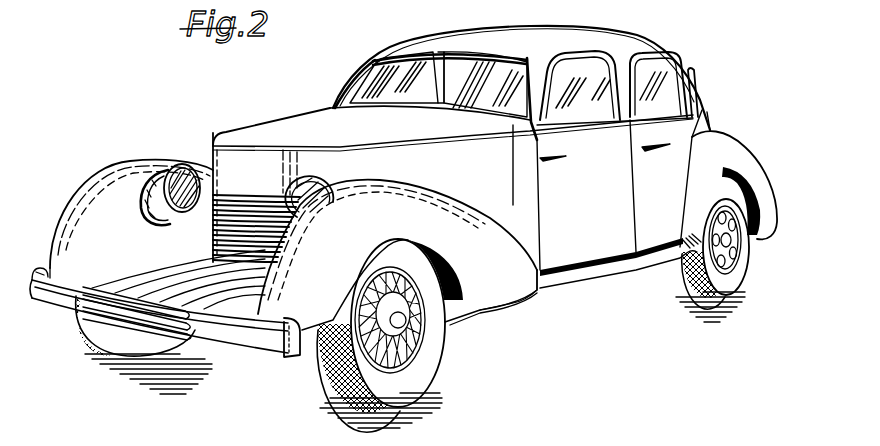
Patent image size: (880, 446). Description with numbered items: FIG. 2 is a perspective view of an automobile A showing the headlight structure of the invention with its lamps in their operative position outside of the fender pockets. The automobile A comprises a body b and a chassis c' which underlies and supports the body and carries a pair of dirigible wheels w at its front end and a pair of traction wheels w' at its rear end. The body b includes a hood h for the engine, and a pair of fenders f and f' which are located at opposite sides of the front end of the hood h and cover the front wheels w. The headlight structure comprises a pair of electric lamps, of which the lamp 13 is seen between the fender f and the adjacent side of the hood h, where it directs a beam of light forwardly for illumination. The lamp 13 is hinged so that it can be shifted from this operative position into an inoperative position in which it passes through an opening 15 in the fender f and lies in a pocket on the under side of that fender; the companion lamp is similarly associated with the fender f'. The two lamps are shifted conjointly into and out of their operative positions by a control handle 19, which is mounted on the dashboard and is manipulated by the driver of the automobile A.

The fender f is at (157, 224).
The electric lamp 13 is at (184, 160).
The opening 15 is at (157, 214).
The hood h is at (289, 121).
The control handle 19 is at (333, 187).
The fender f' is at (397, 255).
The dirigible wheels w is at (387, 335).
The traction wheels w' is at (724, 244).
The automobile A is at (520, 166).
The body b is at (592, 256).
The chassis c' is at (519, 290).